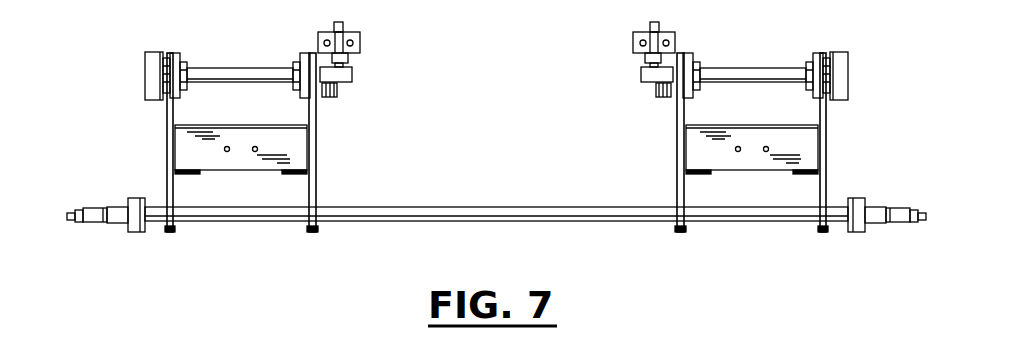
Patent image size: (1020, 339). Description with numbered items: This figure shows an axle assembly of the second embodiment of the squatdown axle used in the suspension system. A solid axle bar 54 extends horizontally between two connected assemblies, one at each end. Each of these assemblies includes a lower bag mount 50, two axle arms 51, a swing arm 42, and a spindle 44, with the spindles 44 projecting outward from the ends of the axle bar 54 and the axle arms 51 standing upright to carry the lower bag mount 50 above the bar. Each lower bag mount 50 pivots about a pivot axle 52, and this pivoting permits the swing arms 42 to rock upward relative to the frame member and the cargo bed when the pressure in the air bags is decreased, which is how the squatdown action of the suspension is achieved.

The swing arm 42 is at (135, 198).
The spindle 44 is at (92, 209).
The lower bag mount 50 is at (287, 143).
The axle arm 51 is at (167, 124).
The pivot axle 52 is at (346, 88).
The solid axle bar 54 is at (412, 206).